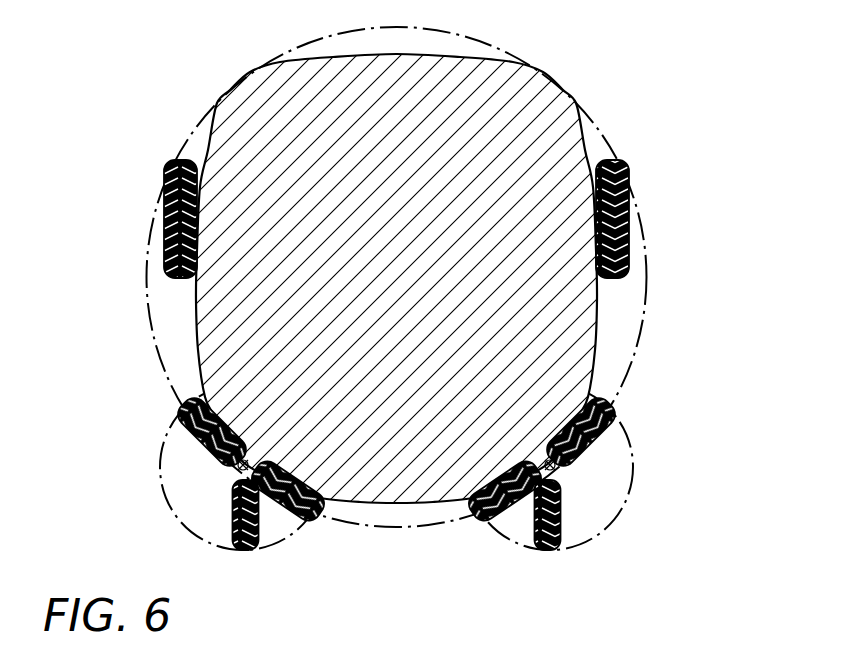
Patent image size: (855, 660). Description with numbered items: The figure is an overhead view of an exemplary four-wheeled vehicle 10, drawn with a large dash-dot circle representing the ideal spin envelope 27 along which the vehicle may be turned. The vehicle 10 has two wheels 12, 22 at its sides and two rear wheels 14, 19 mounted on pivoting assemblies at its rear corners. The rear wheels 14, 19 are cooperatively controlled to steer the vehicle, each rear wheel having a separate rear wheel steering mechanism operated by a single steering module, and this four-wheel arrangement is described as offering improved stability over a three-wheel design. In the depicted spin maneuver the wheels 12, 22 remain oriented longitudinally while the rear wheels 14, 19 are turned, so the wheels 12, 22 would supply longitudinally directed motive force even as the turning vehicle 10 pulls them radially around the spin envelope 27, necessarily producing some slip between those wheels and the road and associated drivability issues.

The vehicle 10 is at (540, 100).
The ideal spin envelope 27 is at (598, 125).
The wheel 12 is at (148, 243).
The wheel 22 is at (628, 240).
The wheel 14 is at (245, 550).
The wheel 19 is at (548, 550).